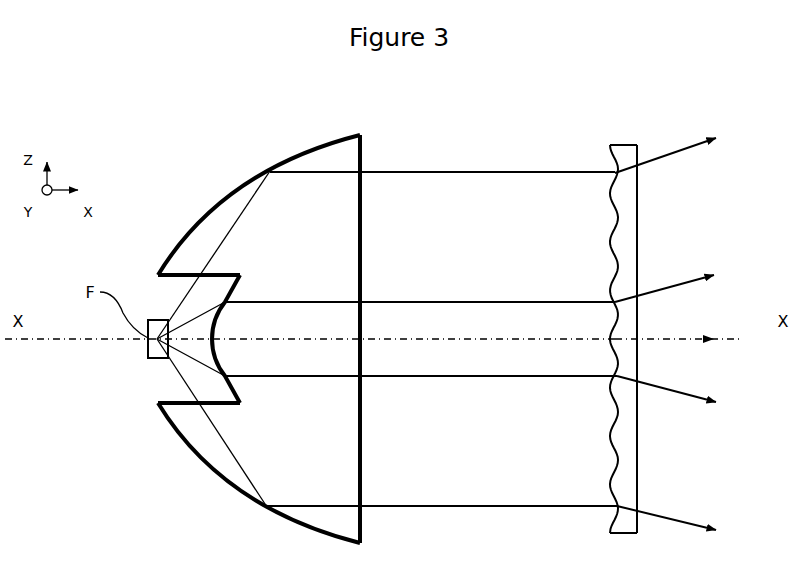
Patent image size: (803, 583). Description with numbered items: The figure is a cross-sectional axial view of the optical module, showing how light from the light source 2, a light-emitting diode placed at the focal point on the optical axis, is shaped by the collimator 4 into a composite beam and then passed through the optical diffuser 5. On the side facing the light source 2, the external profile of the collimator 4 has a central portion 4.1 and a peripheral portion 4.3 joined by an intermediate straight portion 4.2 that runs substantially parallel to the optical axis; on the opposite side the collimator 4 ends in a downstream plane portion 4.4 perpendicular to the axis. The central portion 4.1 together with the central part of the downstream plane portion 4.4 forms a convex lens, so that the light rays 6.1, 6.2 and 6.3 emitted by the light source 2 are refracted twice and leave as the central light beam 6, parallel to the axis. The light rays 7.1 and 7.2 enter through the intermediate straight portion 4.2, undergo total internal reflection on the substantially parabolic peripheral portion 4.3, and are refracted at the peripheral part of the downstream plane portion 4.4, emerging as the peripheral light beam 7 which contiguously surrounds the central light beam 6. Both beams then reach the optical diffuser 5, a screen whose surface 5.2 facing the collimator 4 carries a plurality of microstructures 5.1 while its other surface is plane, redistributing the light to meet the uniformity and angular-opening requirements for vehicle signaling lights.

The light source 2 is at (146, 356).
The collimator 4 is at (266, 312).
The central portion 4.1 is at (226, 300).
The intermediate straight portion 4.2 is at (228, 268).
The peripheral portion 4.3 is at (312, 148).
The downstream plane portion 4.4 is at (362, 145).
The optical diffuser 5 is at (636, 321).
The microstructures 5.1 is at (613, 516).
The diffuser surface 5.2 is at (640, 150).
The central light beam 6 is at (421, 330).
The light ray 6.1 is at (378, 302).
The light ray 6.2 is at (388, 377).
The light ray 6.3 is at (425, 339).
The peripheral light beam 7 is at (387, 329).
The light ray 7.1 is at (430, 172).
The light ray 7.2 is at (388, 507).